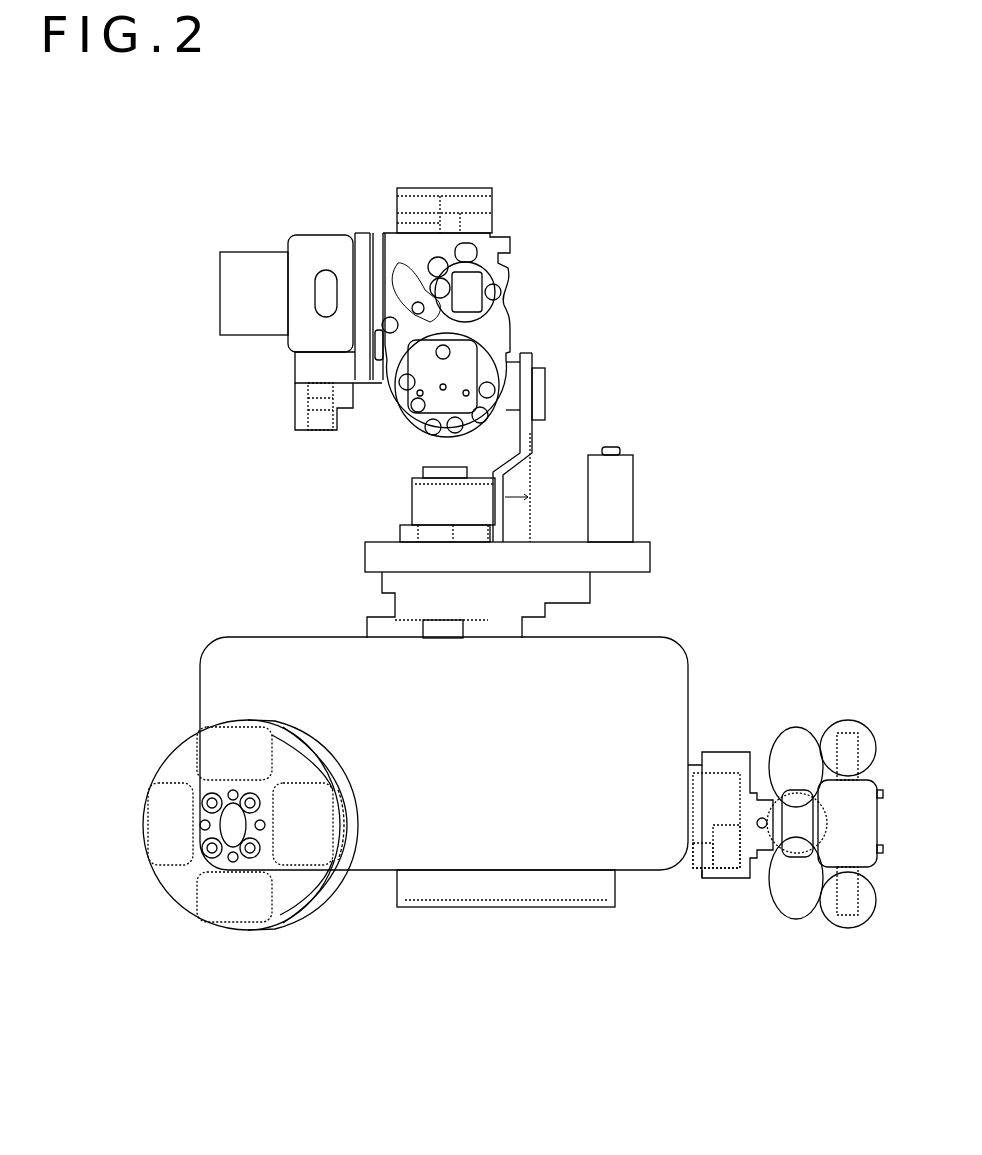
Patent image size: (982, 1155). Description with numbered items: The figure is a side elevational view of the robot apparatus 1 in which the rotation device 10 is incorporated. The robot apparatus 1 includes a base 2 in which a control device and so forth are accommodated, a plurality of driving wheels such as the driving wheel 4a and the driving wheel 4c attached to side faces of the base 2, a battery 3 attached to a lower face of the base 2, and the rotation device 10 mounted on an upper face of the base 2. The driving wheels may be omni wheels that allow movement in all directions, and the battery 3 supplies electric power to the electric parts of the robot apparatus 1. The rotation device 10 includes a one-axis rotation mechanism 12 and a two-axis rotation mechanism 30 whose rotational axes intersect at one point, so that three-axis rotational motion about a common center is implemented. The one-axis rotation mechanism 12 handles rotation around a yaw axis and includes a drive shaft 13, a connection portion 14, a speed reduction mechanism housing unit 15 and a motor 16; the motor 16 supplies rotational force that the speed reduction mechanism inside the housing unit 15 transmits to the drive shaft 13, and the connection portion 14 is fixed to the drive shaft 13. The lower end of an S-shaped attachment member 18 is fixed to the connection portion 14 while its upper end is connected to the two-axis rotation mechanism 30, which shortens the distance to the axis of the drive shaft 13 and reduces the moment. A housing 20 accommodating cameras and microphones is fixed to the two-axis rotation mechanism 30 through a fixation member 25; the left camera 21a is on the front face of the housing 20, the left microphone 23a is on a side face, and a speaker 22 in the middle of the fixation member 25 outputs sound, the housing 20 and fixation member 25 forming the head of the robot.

The robot apparatus 1 is at (525, 1058).
The base 2 is at (683, 640).
The battery 3 is at (608, 906).
The driving wheel 4a is at (172, 765).
The driving wheel 4c is at (800, 725).
The rotation device 10 is at (556, 302).
The one-axis rotation mechanism 12 is at (657, 461).
The drive shaft 13 is at (440, 466).
The connection portion 14 is at (412, 500).
The speed reduction mechanism housing unit 15 is at (652, 552).
The motor 16 is at (635, 496).
The attachment member 18 is at (540, 437).
The housing 20 is at (326, 243).
The left camera 21a is at (240, 253).
The speaker 22 is at (295, 410).
The left microphone 23a is at (312, 297).
The fixation member 25 is at (303, 368).
The two-axis rotation mechanism 30 is at (491, 176).